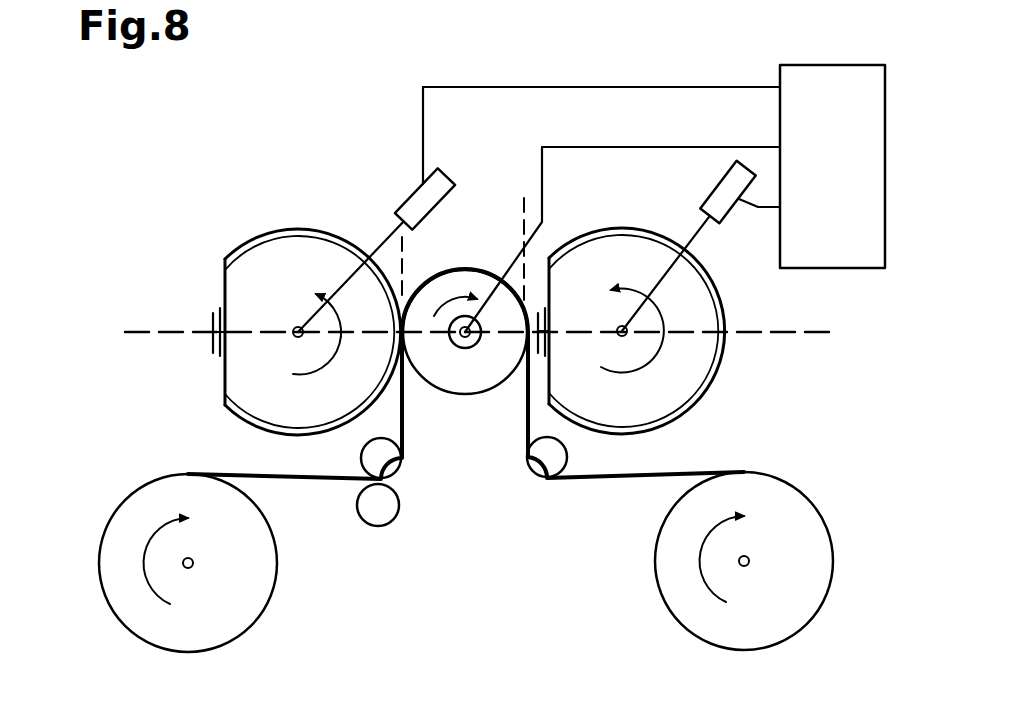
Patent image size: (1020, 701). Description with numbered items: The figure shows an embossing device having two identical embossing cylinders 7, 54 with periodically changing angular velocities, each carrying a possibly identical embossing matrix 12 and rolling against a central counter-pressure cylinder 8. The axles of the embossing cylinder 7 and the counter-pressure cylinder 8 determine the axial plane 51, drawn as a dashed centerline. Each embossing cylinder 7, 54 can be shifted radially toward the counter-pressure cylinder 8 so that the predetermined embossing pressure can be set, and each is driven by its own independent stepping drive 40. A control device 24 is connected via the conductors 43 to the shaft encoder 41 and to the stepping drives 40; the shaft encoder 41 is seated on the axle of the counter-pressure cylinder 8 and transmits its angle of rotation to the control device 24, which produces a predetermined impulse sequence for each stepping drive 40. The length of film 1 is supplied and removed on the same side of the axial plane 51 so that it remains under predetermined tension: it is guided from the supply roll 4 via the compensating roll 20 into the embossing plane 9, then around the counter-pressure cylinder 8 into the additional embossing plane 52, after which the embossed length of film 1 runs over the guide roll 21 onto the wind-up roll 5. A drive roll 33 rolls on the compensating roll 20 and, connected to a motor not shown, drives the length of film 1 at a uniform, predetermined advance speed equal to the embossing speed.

The length of film 1 is at (602, 483).
The supply roll 4 is at (245, 613).
The wind-up roll 5 is at (685, 613).
The embossing cylinder 7 is at (240, 297).
The counter-pressure cylinder 8 is at (465, 282).
The embossing plane 9 is at (400, 268).
The embossing matrix 12 is at (600, 232).
The compensating roll 20 is at (367, 460).
The guide roll 21 is at (537, 468).
The control device 24 is at (821, 76).
The drive roll 33 is at (385, 507).
The stepping drive 40 is at (715, 200).
The shaft encoder 41 is at (453, 340).
The conductors 43 is at (765, 207).
The axial plane 51 is at (806, 333).
The additional embossing plane 52 is at (524, 205).
The embossing cylinder 54 is at (668, 377).